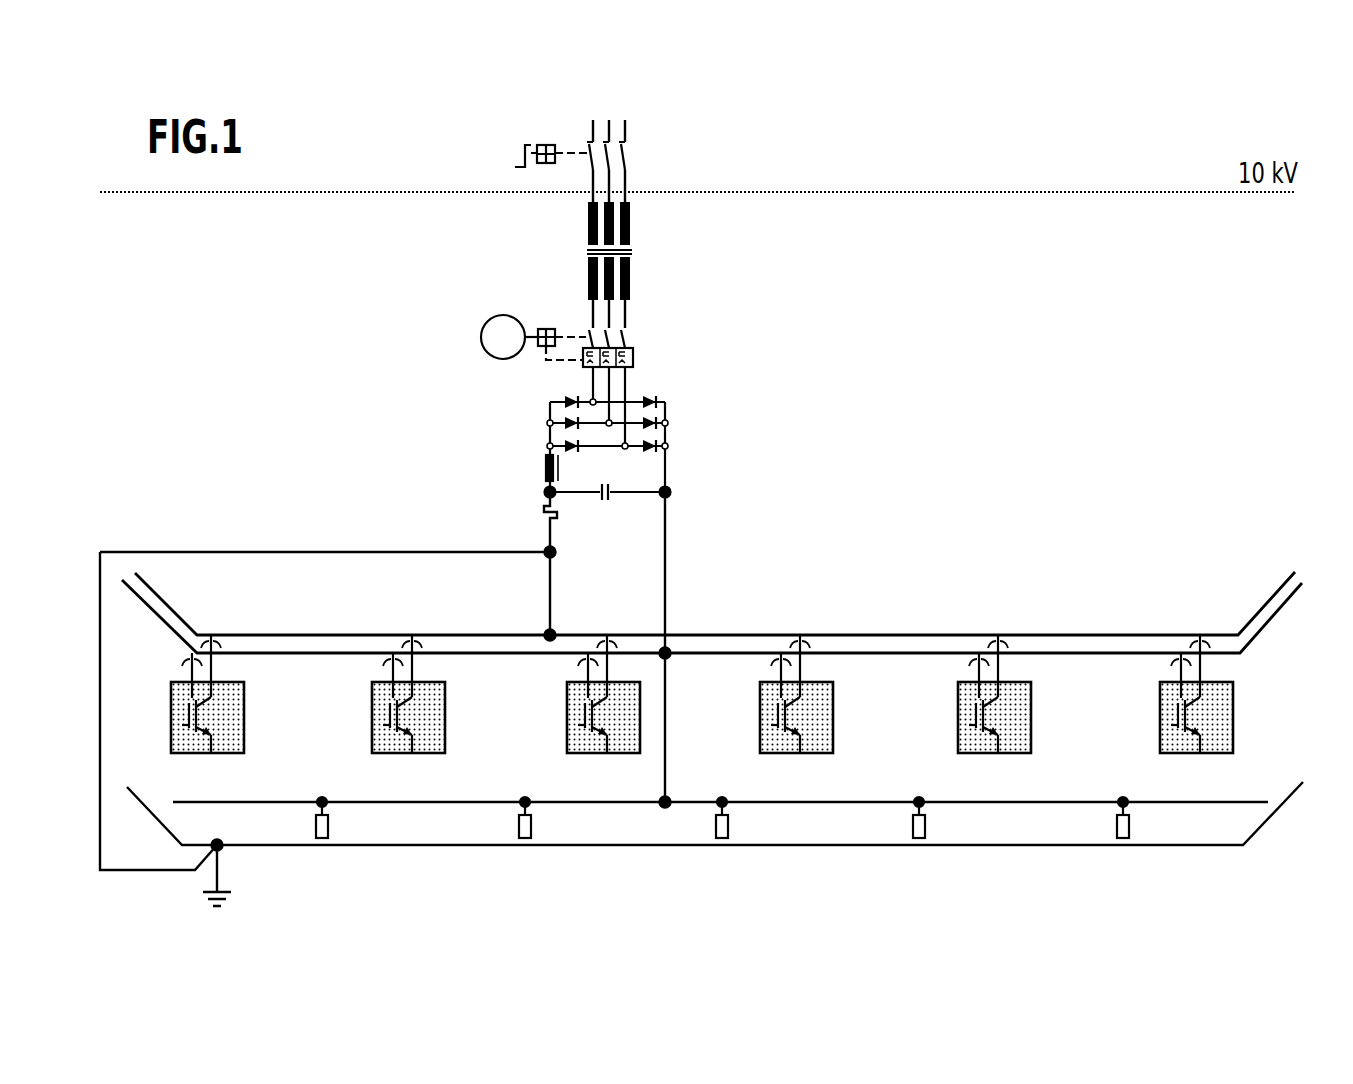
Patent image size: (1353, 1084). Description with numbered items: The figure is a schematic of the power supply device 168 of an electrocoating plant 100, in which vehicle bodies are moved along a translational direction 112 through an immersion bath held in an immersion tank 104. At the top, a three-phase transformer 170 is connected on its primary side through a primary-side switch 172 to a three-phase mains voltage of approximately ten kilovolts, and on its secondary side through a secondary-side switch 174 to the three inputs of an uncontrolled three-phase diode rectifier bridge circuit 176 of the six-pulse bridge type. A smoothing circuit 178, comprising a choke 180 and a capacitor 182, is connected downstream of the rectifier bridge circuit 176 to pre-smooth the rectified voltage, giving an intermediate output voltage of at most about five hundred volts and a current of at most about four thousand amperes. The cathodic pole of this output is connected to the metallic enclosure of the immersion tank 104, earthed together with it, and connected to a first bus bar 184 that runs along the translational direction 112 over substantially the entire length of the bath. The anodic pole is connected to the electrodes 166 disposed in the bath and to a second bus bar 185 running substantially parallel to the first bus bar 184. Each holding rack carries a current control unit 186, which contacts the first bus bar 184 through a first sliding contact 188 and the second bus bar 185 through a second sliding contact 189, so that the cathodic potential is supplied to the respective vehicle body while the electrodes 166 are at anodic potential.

The electrocoating plant 100 is at (712, 539).
The immersion tank 104 is at (1275, 815).
The translational direction 112 is at (852, 593).
The electrodes 166 is at (330, 826).
The power supply device 168 is at (525, 400).
The three-phase transformer 170 is at (643, 243).
The primary-side switch 172 is at (648, 151).
The secondary-side switch 174 is at (648, 332).
The rectifier bridge circuit 176 is at (678, 407).
The smoothing circuit 178 is at (668, 501).
The choke 180 is at (547, 467).
The capacitor 182 is at (605, 500).
The first bus bar 184 is at (922, 633).
The second bus bar 185 is at (1052, 650).
The current control unit 186 is at (246, 718).
The first sliding contact 188 is at (415, 634).
The second sliding contact 189 is at (392, 655).